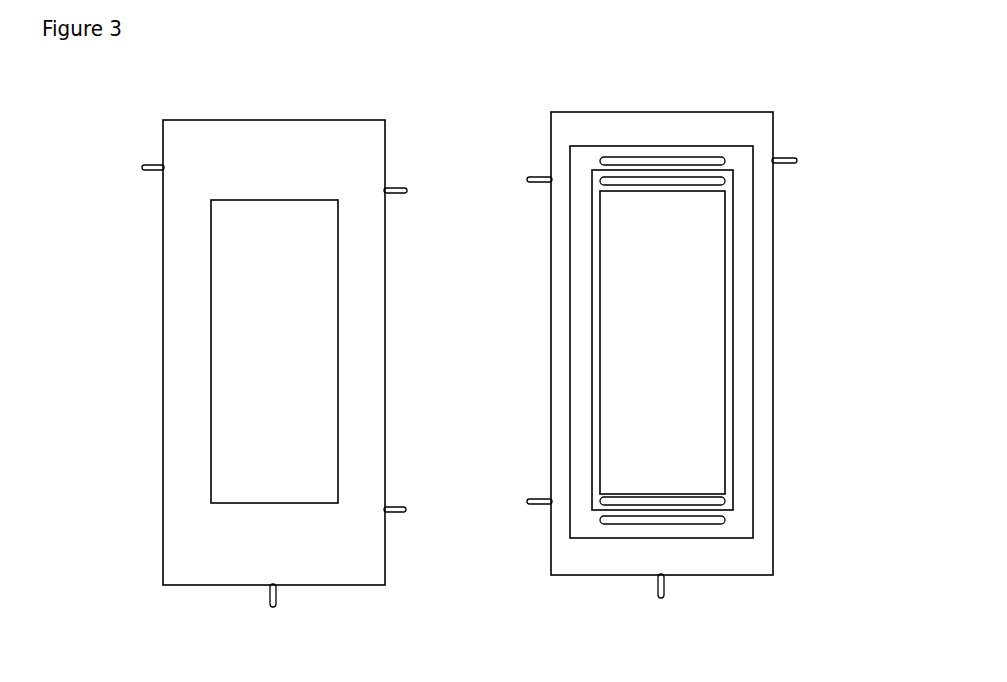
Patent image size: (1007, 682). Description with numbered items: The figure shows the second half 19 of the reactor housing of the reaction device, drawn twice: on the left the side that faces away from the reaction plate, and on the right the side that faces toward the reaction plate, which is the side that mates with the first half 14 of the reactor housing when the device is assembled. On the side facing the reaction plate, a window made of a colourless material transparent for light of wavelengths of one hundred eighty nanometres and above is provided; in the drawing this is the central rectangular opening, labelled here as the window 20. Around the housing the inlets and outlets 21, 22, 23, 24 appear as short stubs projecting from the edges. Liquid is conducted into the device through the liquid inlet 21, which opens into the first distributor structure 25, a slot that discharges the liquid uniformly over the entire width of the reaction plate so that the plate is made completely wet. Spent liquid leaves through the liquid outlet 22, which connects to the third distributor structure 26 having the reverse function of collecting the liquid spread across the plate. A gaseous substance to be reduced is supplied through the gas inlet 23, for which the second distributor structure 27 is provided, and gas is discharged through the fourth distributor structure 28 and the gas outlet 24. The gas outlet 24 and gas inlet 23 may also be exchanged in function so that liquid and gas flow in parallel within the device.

The first half of the reactor housing 14 is at (748, 208).
The second half of the reactor housing 19 is at (176, 390).
The window / opening 20 is at (314, 336).
The liquid inlet 21 is at (134, 167).
The liquid outlet 22 is at (288, 595).
The gas inlet 23 is at (396, 500).
The gas outlet 24 is at (393, 176).
The first distributor structure 25 is at (614, 152).
The third distributor structure 26 is at (696, 523).
The second distributor structure 27 is at (712, 499).
The fourth distributor structure 28 is at (694, 172).